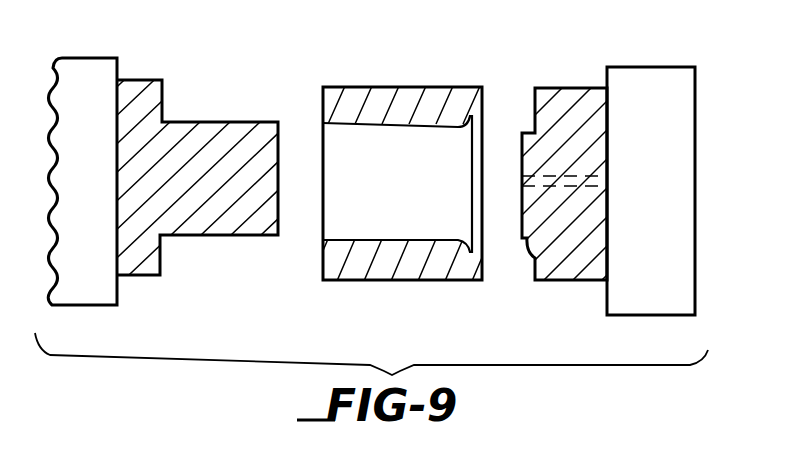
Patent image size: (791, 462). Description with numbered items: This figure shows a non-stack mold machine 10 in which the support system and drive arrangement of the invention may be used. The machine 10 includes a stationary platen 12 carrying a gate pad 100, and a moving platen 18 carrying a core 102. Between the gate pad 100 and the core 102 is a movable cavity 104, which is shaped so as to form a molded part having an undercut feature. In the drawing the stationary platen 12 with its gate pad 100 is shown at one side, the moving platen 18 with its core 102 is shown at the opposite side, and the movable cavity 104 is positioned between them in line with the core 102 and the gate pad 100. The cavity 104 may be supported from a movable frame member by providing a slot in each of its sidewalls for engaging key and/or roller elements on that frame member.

The non-stack mold machine 10 is at (645, 54).
The stationary platen 12 is at (687, 188).
The moving platen 18 is at (87, 58).
The gate pad 100 is at (557, 88).
The core 102 is at (213, 122).
The movable cavity 104 is at (391, 87).